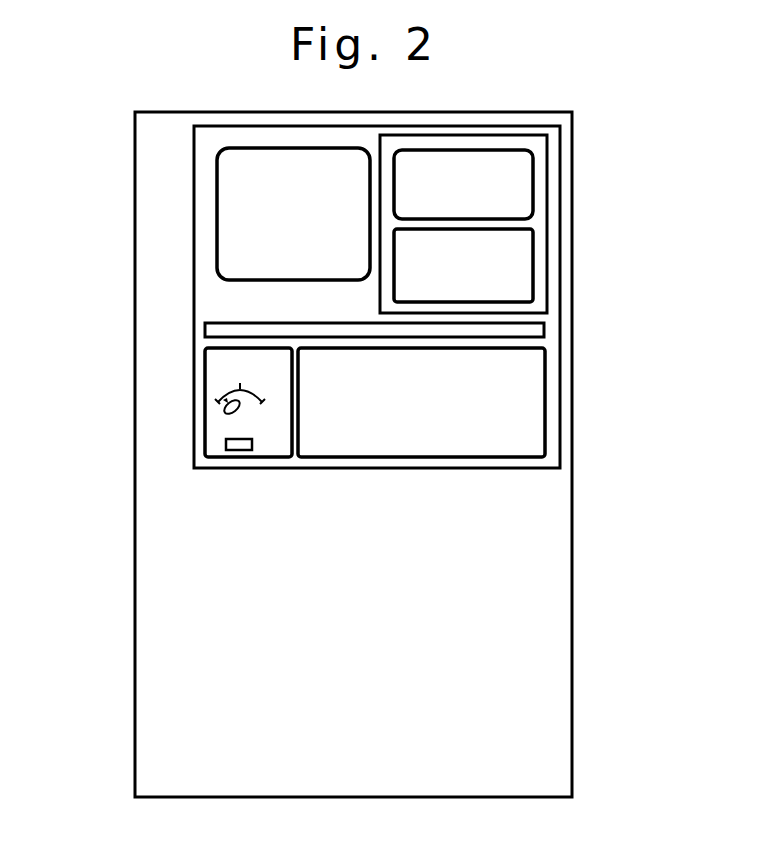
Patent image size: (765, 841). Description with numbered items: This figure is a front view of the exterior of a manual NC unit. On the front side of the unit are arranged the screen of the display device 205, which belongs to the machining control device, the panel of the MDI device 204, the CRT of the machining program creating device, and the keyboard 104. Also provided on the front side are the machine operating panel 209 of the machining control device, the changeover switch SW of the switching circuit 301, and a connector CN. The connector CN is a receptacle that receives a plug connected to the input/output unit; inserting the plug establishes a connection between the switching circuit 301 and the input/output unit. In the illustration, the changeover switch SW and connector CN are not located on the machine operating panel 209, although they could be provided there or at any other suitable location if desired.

The element CRT is at (276, 155).
The display device 205 is at (527, 192).
The MDI device 204 is at (523, 275).
The keyboard 104 is at (537, 332).
The switching circuit 301 is at (210, 375).
The machine operating panel 209 is at (535, 405).
The changeover switch SW is at (258, 422).
The connector CN is at (233, 450).